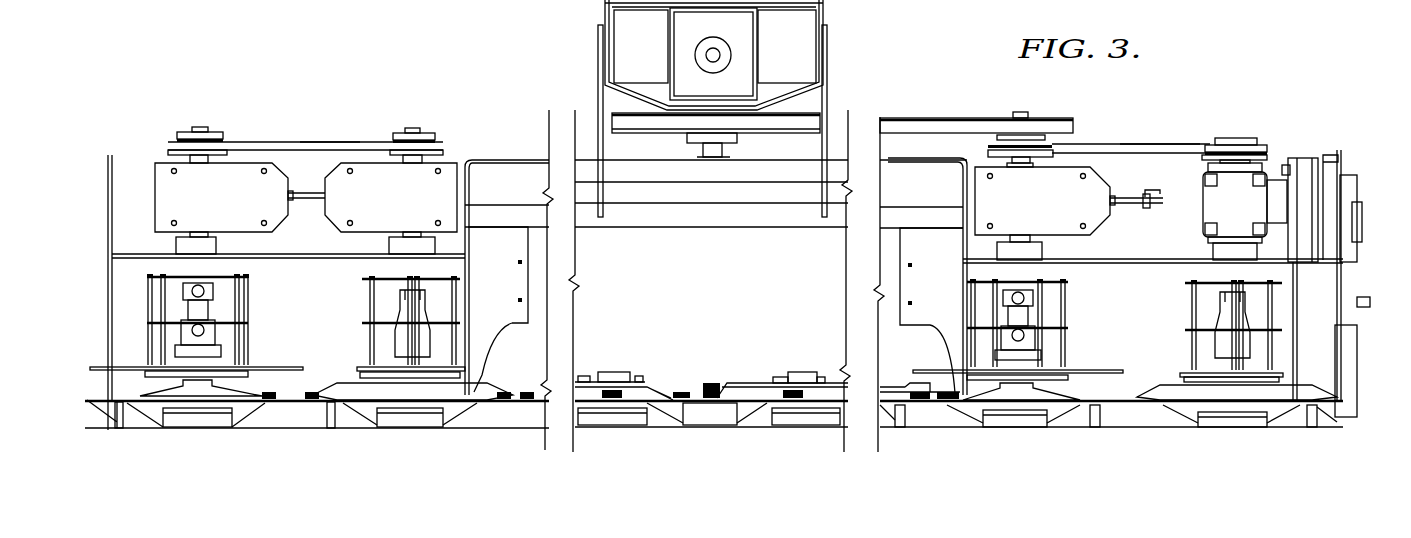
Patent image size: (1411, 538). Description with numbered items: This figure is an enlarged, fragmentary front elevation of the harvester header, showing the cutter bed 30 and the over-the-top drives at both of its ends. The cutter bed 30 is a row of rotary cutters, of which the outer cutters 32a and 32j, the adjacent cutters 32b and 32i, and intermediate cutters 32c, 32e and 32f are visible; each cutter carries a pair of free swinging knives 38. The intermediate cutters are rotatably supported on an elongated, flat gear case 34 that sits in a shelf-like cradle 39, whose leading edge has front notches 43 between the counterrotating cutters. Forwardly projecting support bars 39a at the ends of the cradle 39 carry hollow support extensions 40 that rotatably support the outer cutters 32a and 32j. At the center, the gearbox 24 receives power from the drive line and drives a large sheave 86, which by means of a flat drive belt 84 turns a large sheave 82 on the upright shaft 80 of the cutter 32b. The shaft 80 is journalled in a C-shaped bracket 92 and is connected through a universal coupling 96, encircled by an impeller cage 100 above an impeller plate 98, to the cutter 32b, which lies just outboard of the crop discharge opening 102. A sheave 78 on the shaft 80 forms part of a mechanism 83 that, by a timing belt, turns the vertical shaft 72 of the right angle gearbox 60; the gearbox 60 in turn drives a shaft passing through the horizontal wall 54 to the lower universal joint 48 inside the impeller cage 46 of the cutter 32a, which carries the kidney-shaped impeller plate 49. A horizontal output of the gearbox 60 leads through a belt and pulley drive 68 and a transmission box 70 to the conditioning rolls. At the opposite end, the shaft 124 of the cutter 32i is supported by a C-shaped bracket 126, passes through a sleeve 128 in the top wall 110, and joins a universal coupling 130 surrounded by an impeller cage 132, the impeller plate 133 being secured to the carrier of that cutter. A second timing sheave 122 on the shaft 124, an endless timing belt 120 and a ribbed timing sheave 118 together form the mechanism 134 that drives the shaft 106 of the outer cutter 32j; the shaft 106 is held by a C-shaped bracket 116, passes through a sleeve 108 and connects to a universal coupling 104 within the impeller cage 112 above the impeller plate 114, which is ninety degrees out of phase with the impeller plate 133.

The gearbox 24 is at (745, 58).
The cutter bed 30 is at (757, 434).
The rotary cutter 32a is at (1294, 393).
The rotary cutter 32b is at (1070, 392).
The rotary cutter 32c is at (884, 390).
The rotary cutter 32e is at (755, 388).
The rotary cutter 32f is at (663, 395).
The rotary cutter 32i is at (350, 385).
The rotary cutter 32j is at (248, 386).
The gear case 34 is at (903, 425).
The free swinging knives 38 is at (682, 393).
The cradle 39 is at (1003, 430).
The support bars 39a is at (320, 426).
The hollow support extensions 40 is at (120, 418).
The front notches 43 is at (710, 420).
The impeller cage 46 is at (1171, 283).
The lower universal joint 48 is at (1226, 318).
The kidney-shaped impeller plate 49 is at (1176, 373).
The horizontal partition or wall 54 is at (1073, 258).
The right angle gearbox 60 is at (1210, 201).
The belt and pulley drive 68 is at (1305, 186).
The transmission box 70 is at (1348, 188).
The vertical shaft 72 is at (1233, 137).
The sheave 78 is at (1052, 145).
The upright shaft 80 is at (1020, 112).
The large sheave 82 is at (985, 117).
The mechanism 83 is at (1128, 134).
The flat drive belt 84 is at (908, 123).
The large sheave 86 is at (618, 112).
The C-shaped bracket 92 is at (987, 195).
The universal coupling 96 is at (1008, 318).
The kidney shaped impeller plate 98 is at (1078, 370).
The impeller cage 100 is at (1083, 304).
The crop discharge opening 102 is at (712, 303).
The universal coupling 104 is at (218, 306).
The shaft 106 is at (199, 127).
The sleeve 108 is at (215, 248).
The top wall 110 is at (328, 256).
The impeller cage 112 is at (256, 317).
The impeller plate 114 is at (122, 367).
The C-shaped bracket 116 is at (165, 187).
The ribbed timing sheave 118 is at (178, 140).
The endless timing belt 120 is at (258, 148).
The second timing sheave 122 is at (393, 137).
The shaft 124 is at (415, 128).
The C-shaped bracket 126 is at (445, 185).
The sleeve 128 is at (432, 265).
The universal coupling 130 is at (400, 310).
The impeller cage 132 is at (474, 317).
The impeller plate 133 is at (430, 376).
The mechanism 134 is at (327, 136).